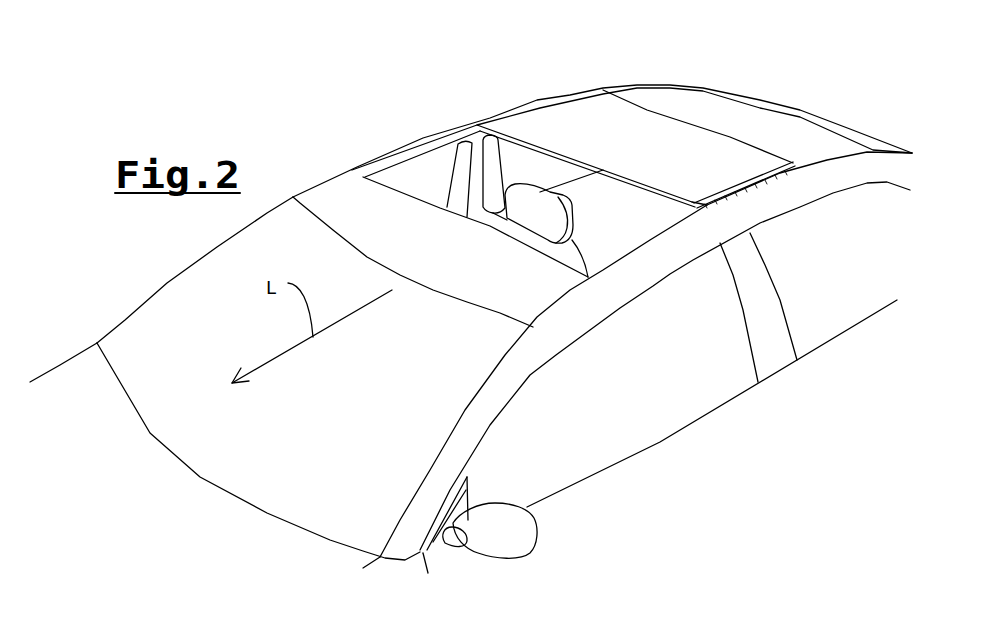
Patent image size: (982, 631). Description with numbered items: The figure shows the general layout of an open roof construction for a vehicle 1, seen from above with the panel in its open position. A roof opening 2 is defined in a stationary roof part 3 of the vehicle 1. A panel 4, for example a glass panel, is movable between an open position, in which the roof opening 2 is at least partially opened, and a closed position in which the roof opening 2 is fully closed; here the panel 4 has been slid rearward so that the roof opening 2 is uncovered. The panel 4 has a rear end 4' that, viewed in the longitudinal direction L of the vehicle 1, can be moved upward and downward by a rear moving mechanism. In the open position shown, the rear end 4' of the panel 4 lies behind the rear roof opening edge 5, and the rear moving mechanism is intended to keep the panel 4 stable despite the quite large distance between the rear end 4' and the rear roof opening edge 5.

The vehicle 1 is at (56, 394).
The roof opening 2 is at (427, 166).
The stationary roof part 3 is at (733, 117).
The panel 4 is at (636, 114).
The rear end 4' is at (698, 91).
The rear roof opening edge 5 is at (703, 207).